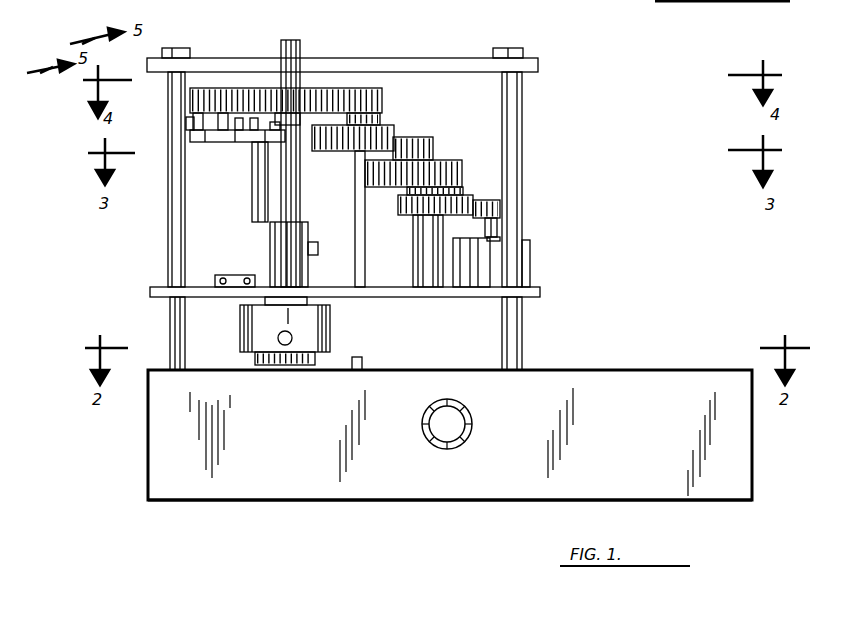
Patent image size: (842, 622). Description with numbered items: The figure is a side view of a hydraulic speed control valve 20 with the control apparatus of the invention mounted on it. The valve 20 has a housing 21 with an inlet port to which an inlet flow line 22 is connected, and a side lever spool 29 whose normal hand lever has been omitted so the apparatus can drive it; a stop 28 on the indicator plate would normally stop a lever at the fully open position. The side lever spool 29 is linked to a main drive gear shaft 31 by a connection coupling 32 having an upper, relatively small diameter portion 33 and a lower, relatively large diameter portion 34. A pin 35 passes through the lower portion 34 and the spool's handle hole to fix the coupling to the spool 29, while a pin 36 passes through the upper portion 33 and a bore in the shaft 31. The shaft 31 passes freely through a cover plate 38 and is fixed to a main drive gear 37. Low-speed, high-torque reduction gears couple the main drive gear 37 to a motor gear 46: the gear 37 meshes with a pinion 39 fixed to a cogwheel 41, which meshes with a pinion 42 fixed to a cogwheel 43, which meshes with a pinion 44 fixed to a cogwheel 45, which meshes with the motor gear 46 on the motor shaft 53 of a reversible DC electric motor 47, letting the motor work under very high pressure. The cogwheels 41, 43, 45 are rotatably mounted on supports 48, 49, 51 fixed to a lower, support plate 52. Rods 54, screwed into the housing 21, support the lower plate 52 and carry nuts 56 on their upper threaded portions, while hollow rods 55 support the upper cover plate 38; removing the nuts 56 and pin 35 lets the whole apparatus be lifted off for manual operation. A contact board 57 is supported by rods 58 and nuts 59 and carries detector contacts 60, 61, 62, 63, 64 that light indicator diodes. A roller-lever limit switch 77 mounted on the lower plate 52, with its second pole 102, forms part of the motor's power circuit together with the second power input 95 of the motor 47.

The hydraulic speed control valve 20 is at (752, 455).
The housing 21 is at (752, 490).
The inlet flow line 22 is at (470, 440).
The stop 28 is at (357, 357).
The side lever spool 29 is at (250, 363).
The main drive gear shaft 31 is at (302, 160).
The connection coupling 32 is at (340, 317).
The upper, relatively small diameter portion 33 is at (300, 258).
The lower, relatively large diameter portion 34 is at (340, 332).
The pin 35 is at (285, 345).
The pin 36 is at (318, 248).
The main drive gear 37 is at (383, 102).
The cover plate 38 is at (425, 58).
The pinion 39 is at (377, 120).
The cogwheel 41 is at (413, 130).
The pinion 42 is at (433, 145).
The cogwheel 43 is at (462, 170).
The pinion 44 is at (463, 185).
The cogwheel 45 is at (473, 203).
The motor gear 46 is at (500, 207).
The reversible DC electric motor 47 is at (530, 262).
The support 48 is at (372, 213).
The support 49 is at (407, 262).
The support 51 is at (455, 285).
The lower, support plate 52 is at (168, 262).
The motor shaft 53 is at (497, 226).
The rods 54 is at (523, 325).
The rods 55 is at (522, 95).
The nuts 56 is at (186, 50).
The contact board 57 is at (207, 158).
The rods 58 is at (252, 212).
The nuts 59 is at (270, 100).
The detector contact 60 is at (250, 142).
The detector contact 61 is at (233, 142).
The detector contact 62 is at (226, 128).
The detector contact 63 is at (212, 128).
The detector contact 64 is at (177, 124).
The roller-lever limit switch 77 is at (245, 278).
The second power input 95 is at (500, 240).
The second pole 102 is at (215, 278).